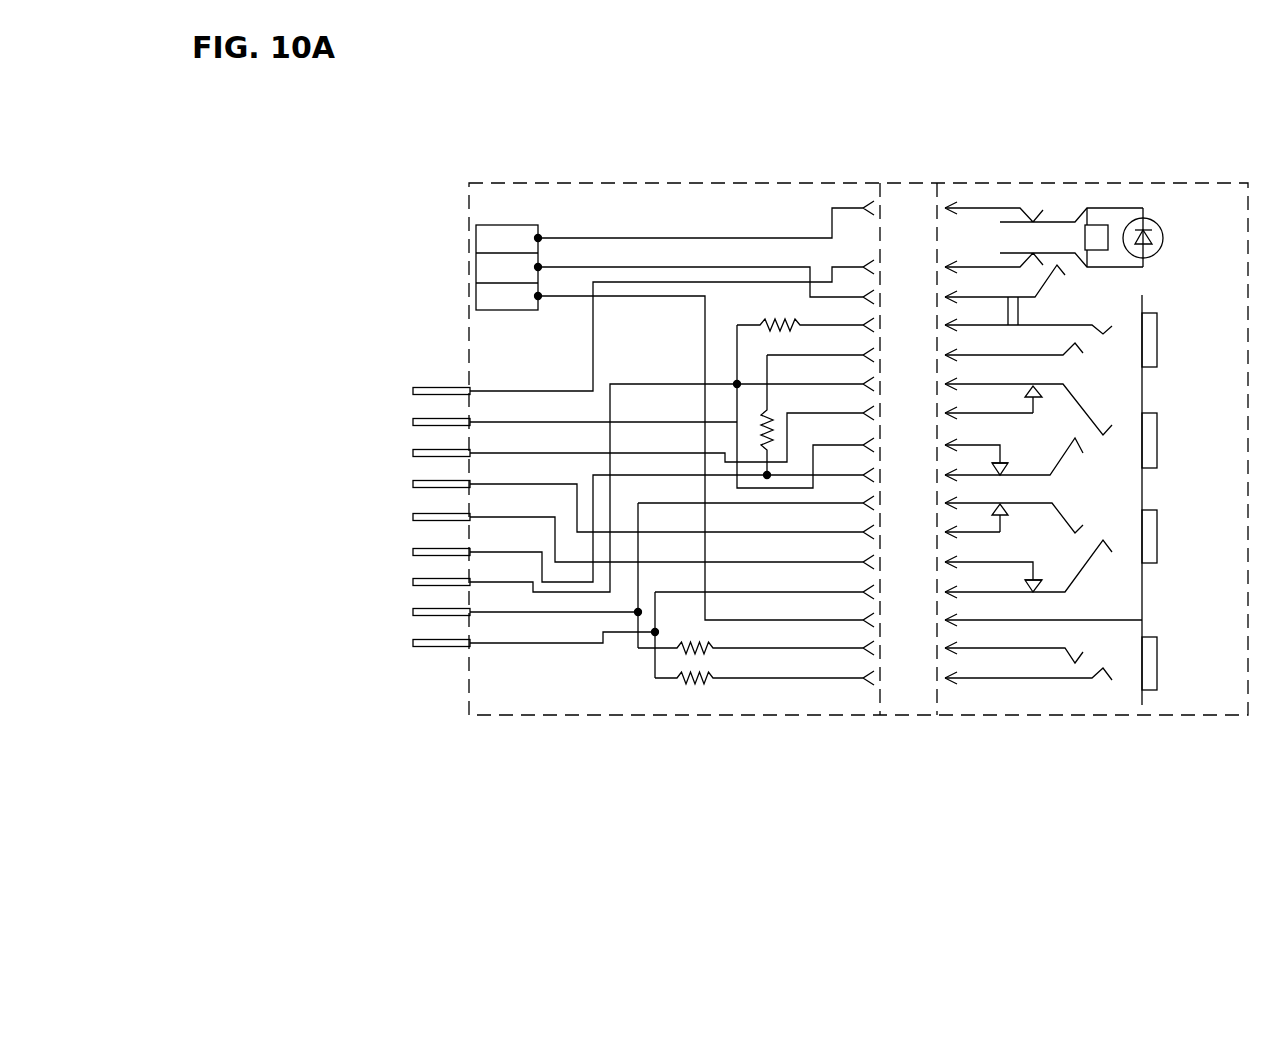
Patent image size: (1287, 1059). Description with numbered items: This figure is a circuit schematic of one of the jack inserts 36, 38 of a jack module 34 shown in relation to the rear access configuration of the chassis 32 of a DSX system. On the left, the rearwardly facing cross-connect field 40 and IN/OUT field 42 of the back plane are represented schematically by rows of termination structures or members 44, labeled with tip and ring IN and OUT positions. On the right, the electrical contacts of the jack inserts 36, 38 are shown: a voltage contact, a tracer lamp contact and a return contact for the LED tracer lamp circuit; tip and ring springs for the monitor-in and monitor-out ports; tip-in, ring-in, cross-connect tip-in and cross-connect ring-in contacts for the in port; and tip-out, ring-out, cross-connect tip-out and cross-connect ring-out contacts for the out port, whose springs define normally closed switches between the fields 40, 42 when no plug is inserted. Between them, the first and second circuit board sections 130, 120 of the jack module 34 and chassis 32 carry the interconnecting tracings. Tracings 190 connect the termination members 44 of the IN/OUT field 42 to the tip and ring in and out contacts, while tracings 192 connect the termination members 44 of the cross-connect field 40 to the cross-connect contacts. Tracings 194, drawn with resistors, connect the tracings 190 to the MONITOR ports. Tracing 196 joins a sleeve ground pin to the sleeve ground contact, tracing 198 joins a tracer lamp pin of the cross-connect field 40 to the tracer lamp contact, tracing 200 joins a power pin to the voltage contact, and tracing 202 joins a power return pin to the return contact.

The chassis 32 is at (1008, 133).
The jack module 34 is at (858, 730).
The jack insert 36 is at (1101, 506).
The jack insert 38 is at (1117, 717).
The cross-connect field 40 is at (348, 395).
The IN/OUT field 42 is at (323, 623).
The termination structure 44 is at (447, 647).
The second circuit board section 120 is at (545, 502).
The first circuit board section 130 is at (627, 715).
The tracings 190 is at (485, 553).
The tracings 192 is at (483, 421).
The tracings 194 is at (843, 327).
The tracing 196 is at (643, 298).
The tracing 198 is at (595, 338).
The tracing 200 is at (602, 237).
The tracing 202 is at (625, 267).